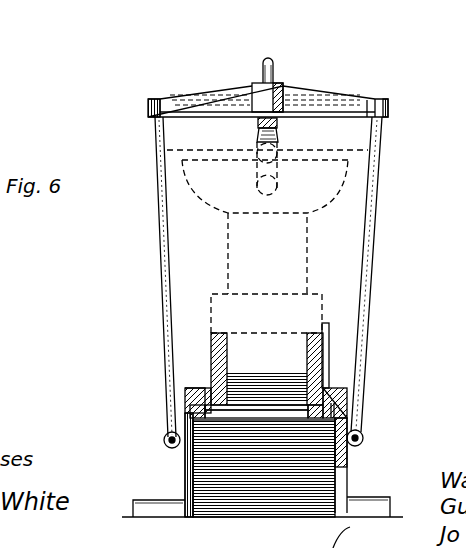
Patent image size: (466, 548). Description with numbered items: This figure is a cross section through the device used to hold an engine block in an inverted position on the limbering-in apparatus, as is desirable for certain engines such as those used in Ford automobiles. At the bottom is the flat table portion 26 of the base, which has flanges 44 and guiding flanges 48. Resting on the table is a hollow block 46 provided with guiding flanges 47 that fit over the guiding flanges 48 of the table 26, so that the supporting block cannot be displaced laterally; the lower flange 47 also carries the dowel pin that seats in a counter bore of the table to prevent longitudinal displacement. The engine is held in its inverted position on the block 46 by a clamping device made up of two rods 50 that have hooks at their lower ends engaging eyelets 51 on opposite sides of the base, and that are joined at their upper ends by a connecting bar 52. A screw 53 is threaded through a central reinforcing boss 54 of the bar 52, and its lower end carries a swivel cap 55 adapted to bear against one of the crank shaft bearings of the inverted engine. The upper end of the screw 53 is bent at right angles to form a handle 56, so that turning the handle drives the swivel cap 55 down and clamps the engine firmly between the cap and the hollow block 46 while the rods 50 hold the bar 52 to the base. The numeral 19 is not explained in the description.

The base plate 19 is at (318, 412).
The table portion 26 is at (340, 396).
The flanges 44 is at (266, 413).
The hollow block 46 is at (211, 350).
The guiding flanges 47 is at (187, 402).
The guiding flanges 48 is at (204, 421).
The rods 50 is at (160, 231).
The eyelets 51 is at (166, 445).
The connecting bar 52 is at (310, 113).
The screw 53 is at (257, 122).
The central reinforcing boss 54 is at (272, 97).
The swivel cap 55 is at (257, 136).
The handle 56 is at (268, 55).